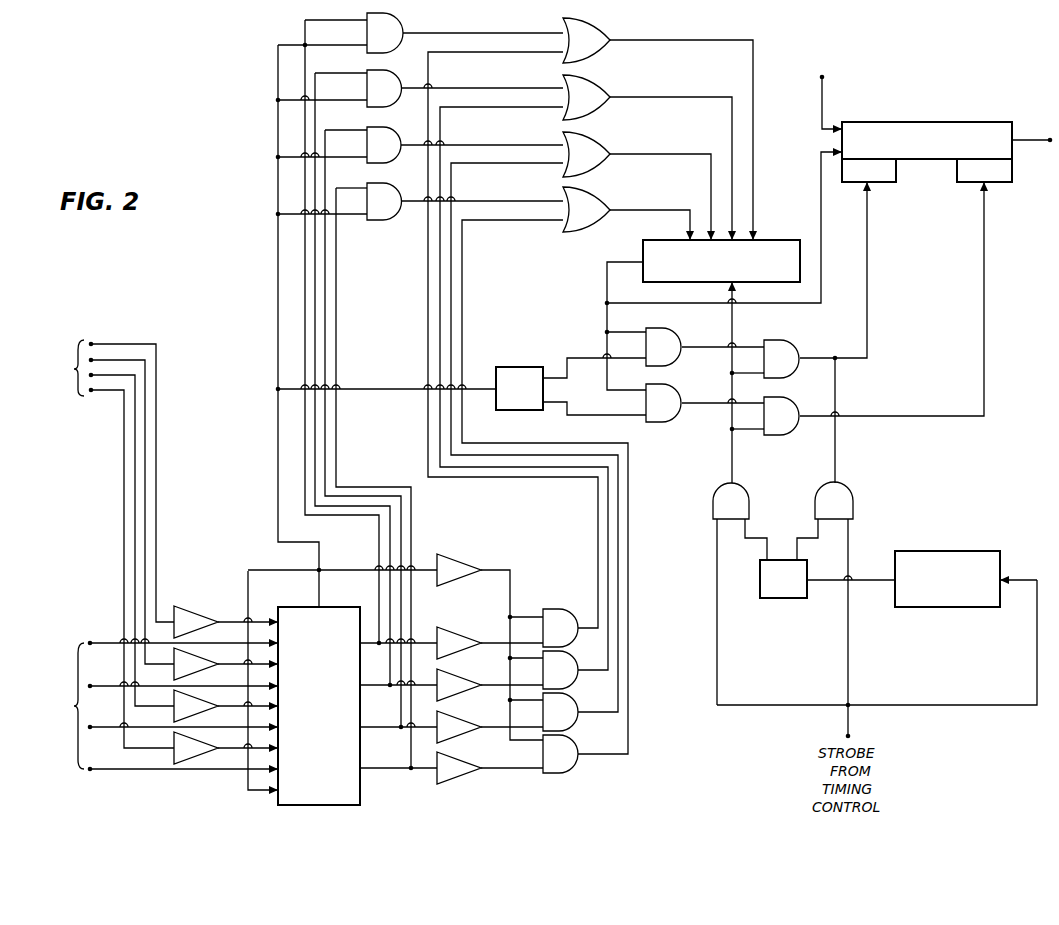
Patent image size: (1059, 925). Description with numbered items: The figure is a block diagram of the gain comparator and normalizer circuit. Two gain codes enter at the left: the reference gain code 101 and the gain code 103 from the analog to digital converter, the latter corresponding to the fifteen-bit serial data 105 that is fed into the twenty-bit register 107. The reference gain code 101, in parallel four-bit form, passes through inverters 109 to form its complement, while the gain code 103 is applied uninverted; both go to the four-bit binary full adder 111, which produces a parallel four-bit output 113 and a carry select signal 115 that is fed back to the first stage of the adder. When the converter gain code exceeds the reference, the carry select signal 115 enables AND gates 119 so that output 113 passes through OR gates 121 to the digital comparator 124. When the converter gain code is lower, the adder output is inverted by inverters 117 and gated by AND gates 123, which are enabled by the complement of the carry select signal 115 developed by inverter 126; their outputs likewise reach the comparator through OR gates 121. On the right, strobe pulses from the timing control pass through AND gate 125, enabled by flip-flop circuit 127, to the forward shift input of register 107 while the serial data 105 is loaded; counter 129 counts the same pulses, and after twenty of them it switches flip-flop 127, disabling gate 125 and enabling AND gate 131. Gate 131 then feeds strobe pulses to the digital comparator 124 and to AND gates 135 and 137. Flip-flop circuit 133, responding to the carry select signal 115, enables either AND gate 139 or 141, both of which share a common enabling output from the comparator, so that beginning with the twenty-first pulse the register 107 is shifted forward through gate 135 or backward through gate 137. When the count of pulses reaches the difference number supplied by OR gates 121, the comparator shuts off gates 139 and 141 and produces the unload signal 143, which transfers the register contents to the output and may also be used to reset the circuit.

The reference gain code 101 is at (49, 400).
The gain code 103 is at (40, 758).
The 15-bit serial data 105 is at (942, 47).
The 20-bit register 107 is at (954, 122).
The inverters 109 is at (195, 604).
The 4-bit binary full adder 111 is at (318, 807).
The parallel 4-bit output 113 is at (391, 790).
The carry select signal 115 is at (278, 460).
The inverters 117 is at (458, 792).
The AND gates 119 is at (382, 226).
The OR gates 121 is at (570, 240).
The AND gates 123 is at (557, 778).
The digital comparator 124 is at (781, 240).
The AND gate 125 is at (853, 492).
The inverter amplifier 126 is at (464, 559).
The flip-flop circuit 127 is at (785, 599).
The counter 129 is at (950, 551).
The AND gate 131 is at (749, 492).
The flip-flop circuit 133 is at (517, 367).
The AND gate 135 is at (795, 345).
The AND gate 137 is at (790, 436).
The AND gate 139 is at (675, 330).
The AND gate 141 is at (670, 422).
The unload signal 143 is at (821, 268).